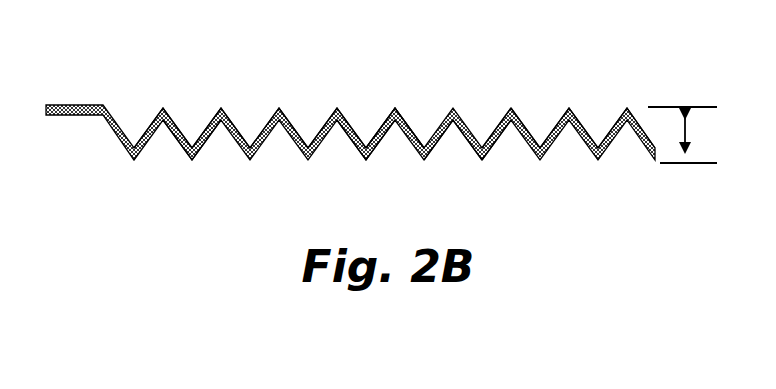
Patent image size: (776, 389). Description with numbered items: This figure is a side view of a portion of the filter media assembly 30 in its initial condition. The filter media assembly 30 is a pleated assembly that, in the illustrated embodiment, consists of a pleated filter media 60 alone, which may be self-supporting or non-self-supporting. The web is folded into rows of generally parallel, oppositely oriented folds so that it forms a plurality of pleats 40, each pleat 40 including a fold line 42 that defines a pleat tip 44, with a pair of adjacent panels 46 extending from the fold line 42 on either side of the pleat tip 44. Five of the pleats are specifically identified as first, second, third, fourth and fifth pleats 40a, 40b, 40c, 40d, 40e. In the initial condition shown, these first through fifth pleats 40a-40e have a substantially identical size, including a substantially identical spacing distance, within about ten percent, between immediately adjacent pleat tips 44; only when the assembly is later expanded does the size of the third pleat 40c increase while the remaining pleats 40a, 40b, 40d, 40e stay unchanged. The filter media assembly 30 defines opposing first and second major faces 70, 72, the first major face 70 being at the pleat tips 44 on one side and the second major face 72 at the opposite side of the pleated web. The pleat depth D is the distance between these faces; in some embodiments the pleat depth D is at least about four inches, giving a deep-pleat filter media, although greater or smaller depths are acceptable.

The filter media assembly 30 is at (598, 66).
The pleat 40 is at (199, 162).
The first pleat 40a is at (150, 117).
The second pleat 40b is at (207, 117).
The third pleat 40c is at (273, 113).
The fourth pleat 40d is at (332, 117).
The fifth pleat 40e is at (383, 117).
The fold line 42 is at (500, 148).
The pleat tip 44 is at (511, 106).
The adjacent panels 46 is at (500, 148).
The pleated filter media 60 is at (444, 148).
The first major face 70 is at (401, 82).
The second major face 72 is at (376, 168).
The pleat depth D is at (685, 128).